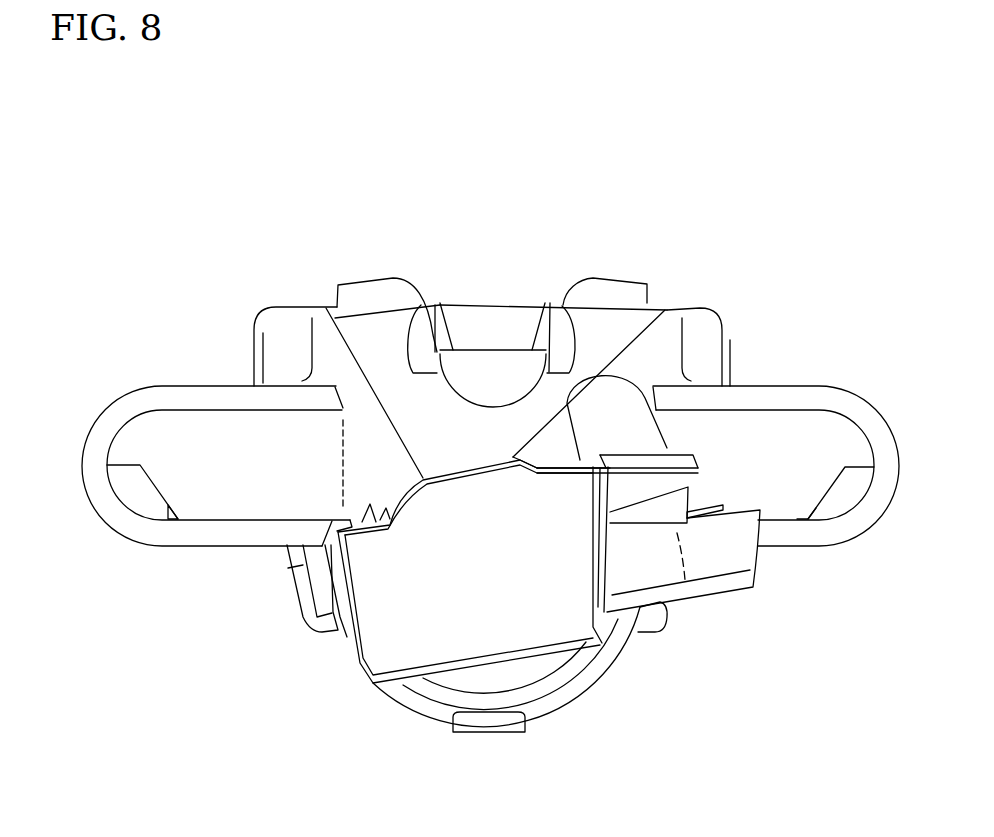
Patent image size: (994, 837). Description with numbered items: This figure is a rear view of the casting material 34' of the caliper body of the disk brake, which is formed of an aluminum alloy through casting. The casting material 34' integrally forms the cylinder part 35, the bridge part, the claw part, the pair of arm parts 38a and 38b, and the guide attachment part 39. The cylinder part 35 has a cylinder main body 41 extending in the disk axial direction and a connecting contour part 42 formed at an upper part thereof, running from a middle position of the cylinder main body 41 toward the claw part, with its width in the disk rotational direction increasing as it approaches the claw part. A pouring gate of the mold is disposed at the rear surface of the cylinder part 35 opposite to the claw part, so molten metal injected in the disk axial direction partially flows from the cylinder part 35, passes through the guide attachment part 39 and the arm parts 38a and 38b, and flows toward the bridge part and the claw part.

The casting material 34' is at (560, 387).
The connecting contour part 42 is at (383, 355).
The arm part 38a is at (210, 433).
The arm part 38b is at (790, 424).
The guide attachment part 39 is at (717, 552).
The cylinder main body 41 is at (418, 632).
The cylinder part 35 is at (580, 703).